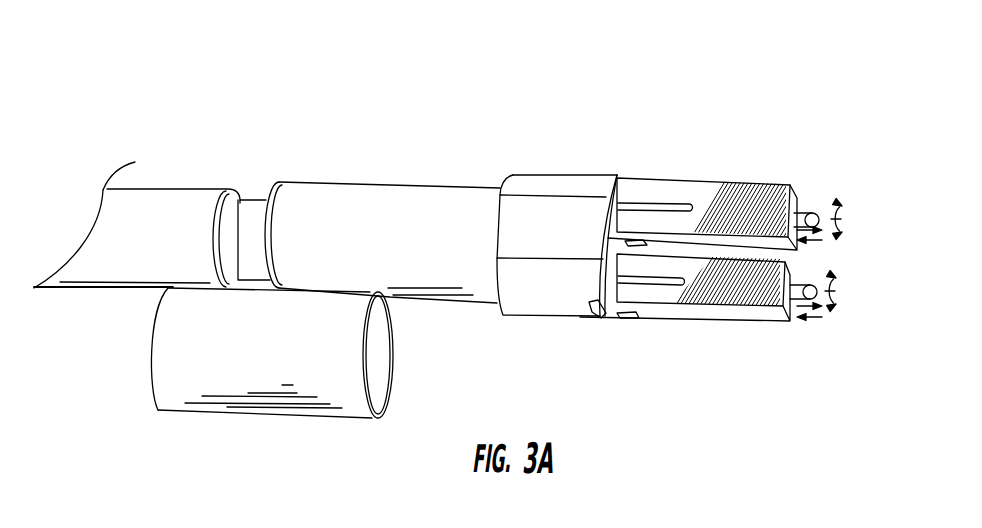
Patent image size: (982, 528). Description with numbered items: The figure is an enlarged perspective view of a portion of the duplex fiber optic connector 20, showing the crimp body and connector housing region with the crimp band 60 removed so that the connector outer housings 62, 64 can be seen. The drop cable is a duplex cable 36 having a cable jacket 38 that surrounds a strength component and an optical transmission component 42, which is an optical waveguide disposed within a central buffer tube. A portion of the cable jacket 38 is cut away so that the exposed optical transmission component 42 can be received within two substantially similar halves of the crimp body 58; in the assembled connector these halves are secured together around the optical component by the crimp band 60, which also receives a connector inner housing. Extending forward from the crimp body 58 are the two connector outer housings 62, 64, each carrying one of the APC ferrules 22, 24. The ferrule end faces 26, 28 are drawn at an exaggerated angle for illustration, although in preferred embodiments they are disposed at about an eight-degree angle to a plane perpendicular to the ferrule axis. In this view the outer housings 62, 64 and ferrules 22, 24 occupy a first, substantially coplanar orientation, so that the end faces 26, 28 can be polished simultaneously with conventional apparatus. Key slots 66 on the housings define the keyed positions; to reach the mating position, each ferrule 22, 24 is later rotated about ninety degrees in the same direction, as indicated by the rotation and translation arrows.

The duplex fiber optic connector 20 is at (423, 28).
The ferrule 22 is at (811, 316).
The ferrule 24 is at (808, 189).
The end face 26 is at (815, 346).
The end face 28 is at (836, 199).
The duplex cable 36 is at (152, 220).
The cable jacket 38 is at (224, 213).
The optical transmission component 42 is at (381, 216).
The crimp body 58 is at (557, 216).
The crimp band 60 is at (272, 385).
The connector outer housing 62 is at (700, 315).
The connector outer housing 64 is at (717, 182).
The key slots 66 is at (618, 312).